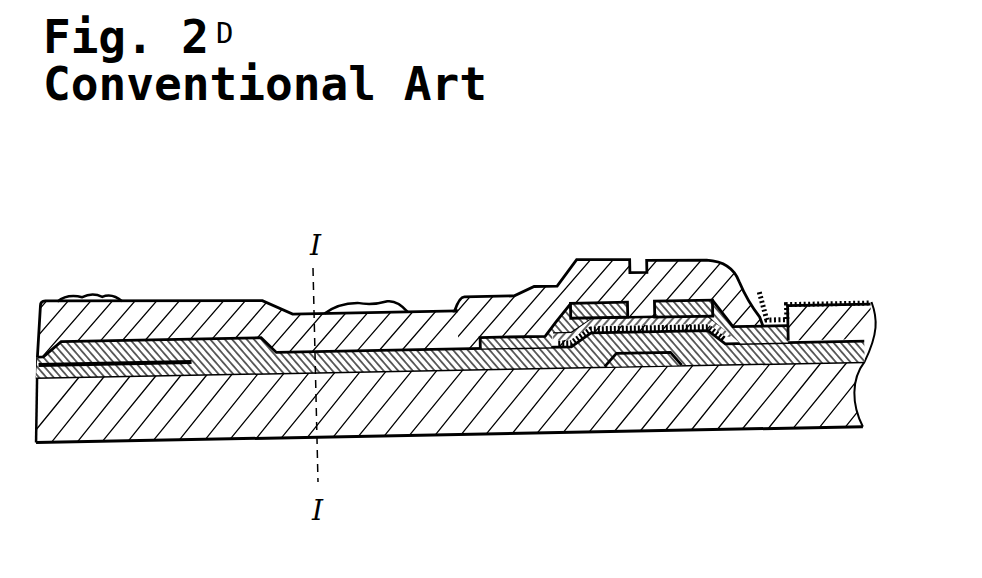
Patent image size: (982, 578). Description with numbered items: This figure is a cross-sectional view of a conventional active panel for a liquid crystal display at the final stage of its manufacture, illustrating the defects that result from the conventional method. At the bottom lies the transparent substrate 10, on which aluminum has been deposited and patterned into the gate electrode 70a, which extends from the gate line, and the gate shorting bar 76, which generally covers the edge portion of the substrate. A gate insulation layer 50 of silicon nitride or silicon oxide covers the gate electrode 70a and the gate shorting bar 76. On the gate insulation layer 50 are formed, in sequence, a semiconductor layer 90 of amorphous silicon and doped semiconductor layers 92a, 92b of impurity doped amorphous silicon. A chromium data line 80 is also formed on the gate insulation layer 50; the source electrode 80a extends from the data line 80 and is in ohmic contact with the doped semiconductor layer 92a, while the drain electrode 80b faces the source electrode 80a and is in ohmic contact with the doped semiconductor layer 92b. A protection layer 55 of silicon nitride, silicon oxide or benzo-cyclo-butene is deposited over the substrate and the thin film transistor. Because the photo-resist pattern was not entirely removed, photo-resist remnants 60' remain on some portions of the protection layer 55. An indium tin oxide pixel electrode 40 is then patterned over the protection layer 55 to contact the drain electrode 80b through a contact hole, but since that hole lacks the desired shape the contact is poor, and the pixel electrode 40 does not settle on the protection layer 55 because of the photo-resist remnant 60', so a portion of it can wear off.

The transparent substrate 10 is at (497, 412).
The pixel electrode 40 is at (861, 303).
The gate insulation layer 50 is at (392, 372).
The protection layer 55 is at (212, 308).
The photo-resist remnants 60' is at (464, 269).
The gate electrode 70a is at (645, 362).
The gate shorting bar 76 is at (115, 372).
The data line 80 is at (514, 328).
The source electrode 80a is at (587, 306).
The drain electrode 80b is at (670, 302).
The semiconductor layer 90 is at (710, 350).
The doped semiconductor layer 92a is at (572, 352).
The doped semiconductor layer 92b is at (744, 276).